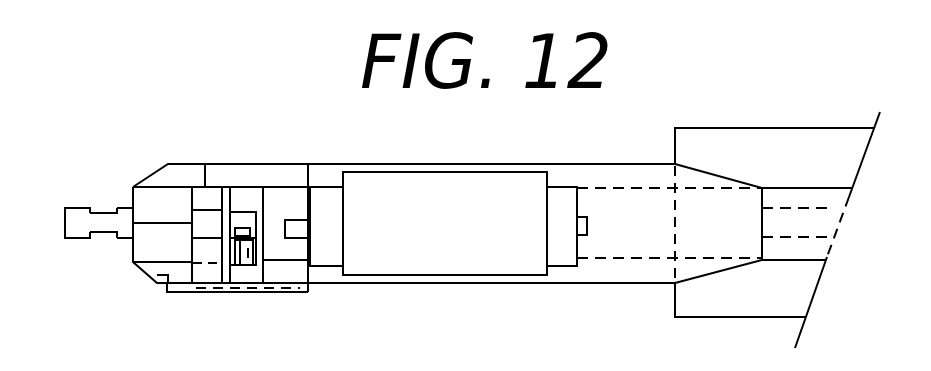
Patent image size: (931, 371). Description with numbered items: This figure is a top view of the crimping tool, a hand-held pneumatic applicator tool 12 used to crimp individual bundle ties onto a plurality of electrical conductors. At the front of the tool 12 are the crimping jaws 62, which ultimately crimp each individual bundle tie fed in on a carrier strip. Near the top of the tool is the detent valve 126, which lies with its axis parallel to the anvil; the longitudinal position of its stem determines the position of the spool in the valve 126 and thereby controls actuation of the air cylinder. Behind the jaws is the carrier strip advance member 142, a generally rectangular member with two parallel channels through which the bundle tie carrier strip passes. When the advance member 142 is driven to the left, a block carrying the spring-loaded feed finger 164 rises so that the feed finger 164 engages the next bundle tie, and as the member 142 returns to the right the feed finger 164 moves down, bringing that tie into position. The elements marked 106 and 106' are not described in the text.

The hand-held applicator tool 12 is at (268, 127).
The crimping jaws 62 is at (80, 213).
The contact member 106 is at (144, 176).
The contact member 106' is at (91, 264).
The carrier strip advance member 142 is at (247, 197).
The feed finger 164 is at (245, 256).
The detent valve 126 is at (458, 188).